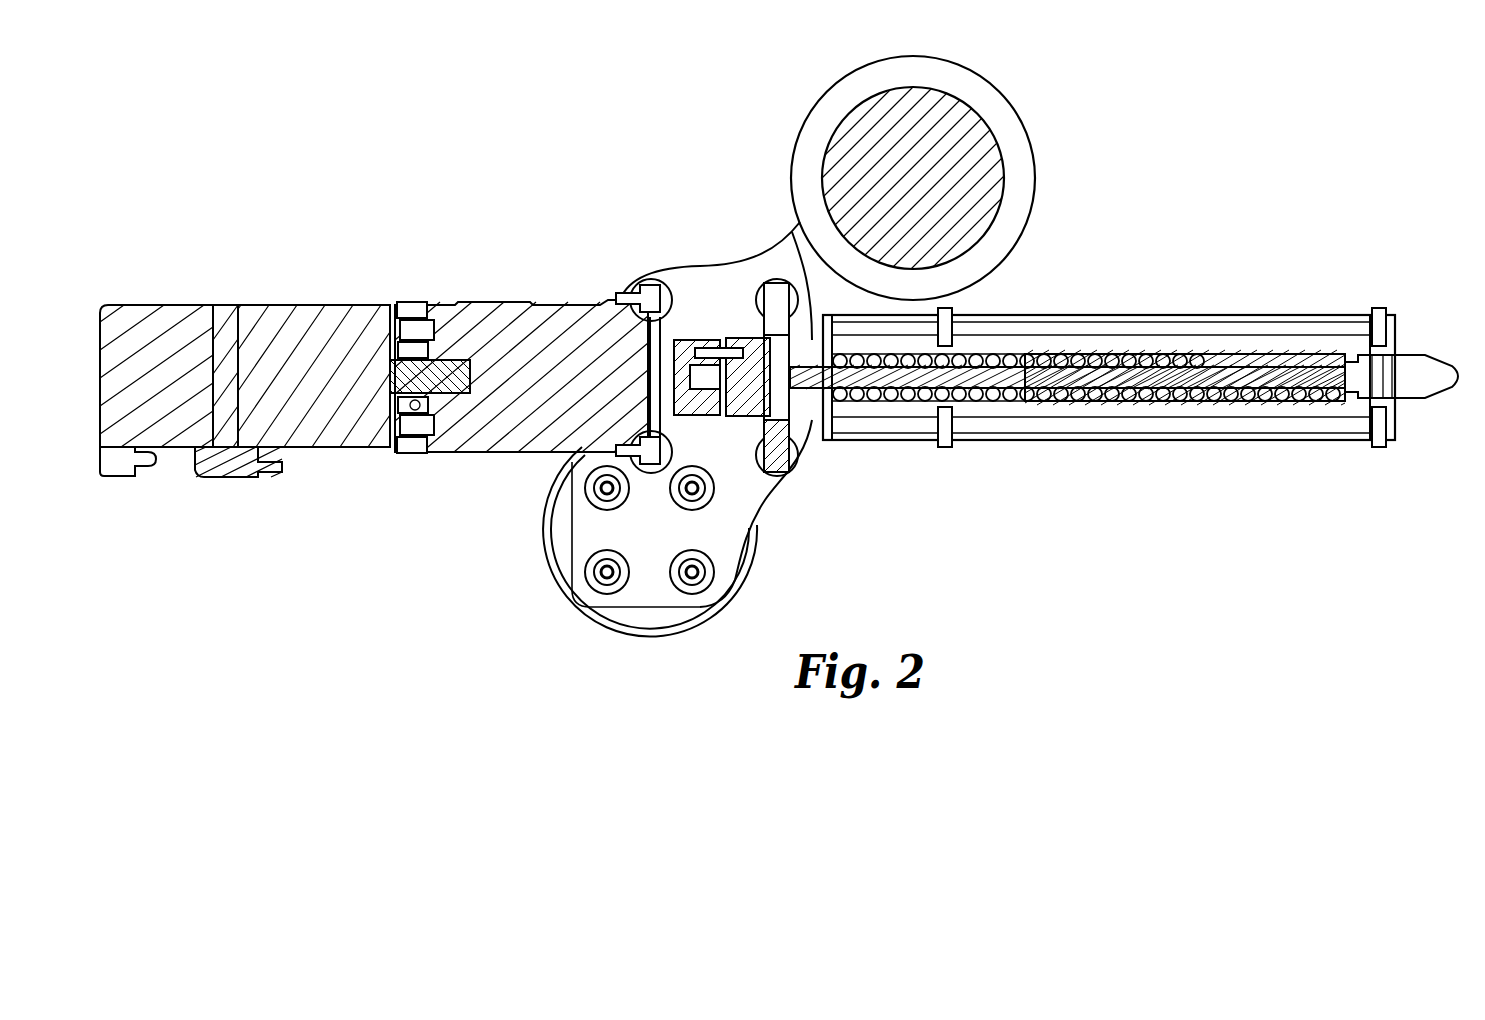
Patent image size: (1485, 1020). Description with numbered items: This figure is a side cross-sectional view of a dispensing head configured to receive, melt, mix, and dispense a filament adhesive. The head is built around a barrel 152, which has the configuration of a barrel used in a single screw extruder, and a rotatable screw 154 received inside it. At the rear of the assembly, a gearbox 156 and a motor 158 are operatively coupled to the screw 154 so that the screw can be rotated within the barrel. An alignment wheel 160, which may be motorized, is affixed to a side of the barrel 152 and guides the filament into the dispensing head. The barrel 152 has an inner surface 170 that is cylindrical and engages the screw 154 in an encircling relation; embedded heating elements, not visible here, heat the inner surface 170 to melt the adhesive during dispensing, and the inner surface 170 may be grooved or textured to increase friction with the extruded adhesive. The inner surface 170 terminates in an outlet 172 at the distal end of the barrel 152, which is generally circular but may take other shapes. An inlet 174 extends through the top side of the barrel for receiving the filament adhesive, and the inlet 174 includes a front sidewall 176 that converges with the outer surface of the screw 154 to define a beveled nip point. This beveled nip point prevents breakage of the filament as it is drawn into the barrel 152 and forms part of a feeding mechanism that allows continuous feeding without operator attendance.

The barrel 152 is at (1249, 325).
The rotatable screw 154 is at (910, 404).
The gearbox 156 is at (571, 390).
The motor 158 is at (324, 394).
The alignment wheel 160 is at (931, 189).
The inner surface 170 is at (1011, 400).
The outlet 172 is at (1440, 376).
The inlet 174 is at (808, 242).
The front sidewall 176 is at (867, 366).